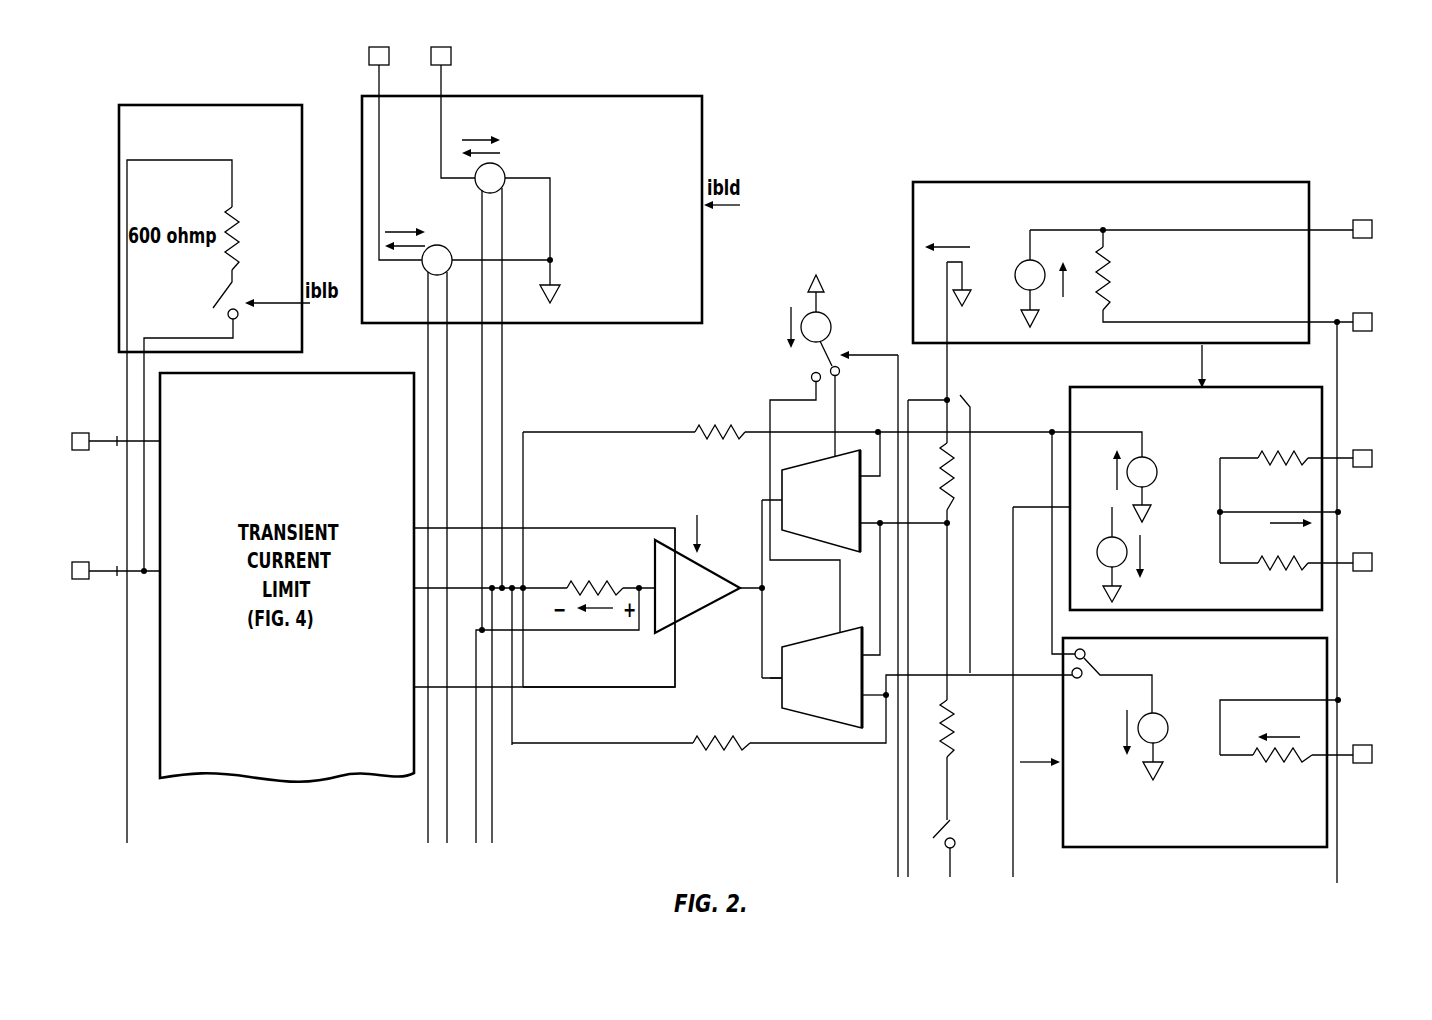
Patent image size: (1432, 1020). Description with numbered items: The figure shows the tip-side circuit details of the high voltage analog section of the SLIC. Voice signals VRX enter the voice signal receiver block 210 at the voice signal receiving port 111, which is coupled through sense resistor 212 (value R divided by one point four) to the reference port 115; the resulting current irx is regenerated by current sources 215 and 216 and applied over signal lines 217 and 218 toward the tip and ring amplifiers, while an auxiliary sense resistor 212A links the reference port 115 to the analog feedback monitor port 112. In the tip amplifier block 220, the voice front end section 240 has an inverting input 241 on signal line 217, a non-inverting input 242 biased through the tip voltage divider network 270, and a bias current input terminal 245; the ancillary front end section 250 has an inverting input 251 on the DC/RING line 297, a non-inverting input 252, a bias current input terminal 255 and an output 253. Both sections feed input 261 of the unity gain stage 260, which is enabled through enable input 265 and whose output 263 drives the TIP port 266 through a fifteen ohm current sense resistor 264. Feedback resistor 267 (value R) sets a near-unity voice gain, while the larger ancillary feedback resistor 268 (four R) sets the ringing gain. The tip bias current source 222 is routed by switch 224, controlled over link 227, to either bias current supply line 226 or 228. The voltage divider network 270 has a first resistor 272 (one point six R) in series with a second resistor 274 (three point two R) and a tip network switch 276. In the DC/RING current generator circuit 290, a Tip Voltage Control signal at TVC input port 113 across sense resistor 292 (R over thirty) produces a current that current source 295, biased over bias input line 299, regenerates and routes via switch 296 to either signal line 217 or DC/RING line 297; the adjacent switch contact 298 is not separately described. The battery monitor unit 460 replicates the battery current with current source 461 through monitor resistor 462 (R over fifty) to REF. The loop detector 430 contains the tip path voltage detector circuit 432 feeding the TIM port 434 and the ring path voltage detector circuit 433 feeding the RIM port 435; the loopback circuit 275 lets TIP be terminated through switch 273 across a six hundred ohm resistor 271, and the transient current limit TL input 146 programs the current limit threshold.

The loopback circuit 275 is at (205, 105).
The loopback resistor 271 is at (240, 237).
The loopback switch 273 is at (222, 294).
The ring current monitoring (RIM) port 435 is at (368, 64).
The tip current monitoring (TIM) port 434 is at (451, 55).
The loop detector 430 is at (703, 110).
The tip path voltage detector circuit 432 is at (507, 184).
The ring path voltage detector circuit 433 is at (427, 270).
The transient current limit TL input 146 is at (89, 451).
The TIP output port 266 is at (87, 580).
The tip amplifier block 220 is at (640, 473).
The current sense resistor 264 is at (620, 580).
The unity gain stage output 263 is at (658, 594).
The enable input 265 is at (693, 548).
The unity gain stage input 261 is at (752, 560).
The unity gain stage 260 is at (712, 620).
The feedback resistor 267 is at (708, 426).
The voice signal front end section 240 is at (826, 458).
The inverting input of front end section 240 241 is at (862, 482).
The non-inverting input of front end section 240 242 is at (862, 528).
The bias current input terminal of front end section 240 245 is at (840, 455).
The tip bias current source 222 is at (830, 313).
The bias current supply switch 224 is at (812, 363).
The bias current supply line 226 is at (840, 389).
The control link 227 is at (863, 348).
The bias current supply line 228 is at (771, 418).
The ancillary signal mode front end section 250 is at (800, 713).
The inverting input of front end section 250 251 is at (866, 700).
The non-inverting input of front end section 250 252 is at (864, 664).
The output of front end section 250 253 is at (780, 688).
The bias current input terminal of front end section 250 255 is at (840, 630).
The ancillary path feedback resistor 268 is at (713, 753).
The signal line 217 is at (992, 430).
The first divider resistor 272 is at (956, 462).
The second divider resistor 274 is at (958, 702).
The tip network switch 276 is at (957, 836).
The tip voltage divider network 270 is at (966, 582).
The signal line 218 is at (1032, 507).
The bias input line 299 is at (1016, 777).
The battery monitor unit 460 is at (1167, 181).
The battery monitor current source 461 is at (1017, 268).
The battery voltage monitor resistor 462 is at (1113, 262).
The voice signal receiver block 210 is at (1130, 387).
The tip associated current source 215 is at (1157, 470).
The ring associated current source 216 is at (1099, 553).
The sense resistor 212 is at (1258, 463).
The auxiliary sense resistor 212A is at (1286, 568).
The reference port 115 is at (1340, 513).
The voice signal receiving port 111 is at (1358, 448).
The analog feedback monitor (AFM) port 112 is at (1365, 554).
The TVC input port 113 is at (1363, 745).
The tip associated DC/RING current generator circuit 290 is at (1142, 848).
The switch contact 298 is at (1085, 650).
The DC/RING line 297 is at (1075, 680).
The DC/RING switch 296 is at (1100, 670).
The DC/RING current source 295 is at (1168, 728).
The DC/RING sense resistor 292 is at (1257, 758).